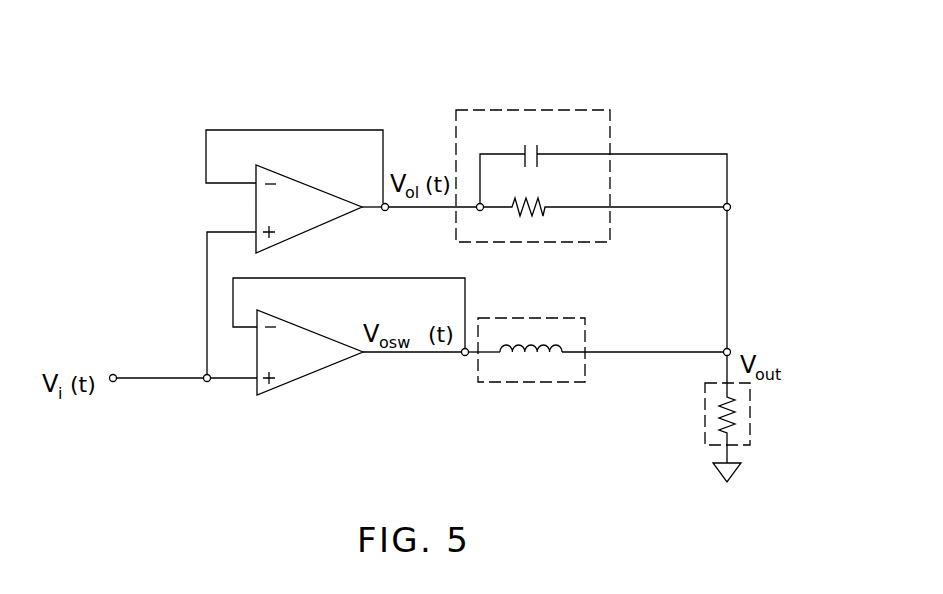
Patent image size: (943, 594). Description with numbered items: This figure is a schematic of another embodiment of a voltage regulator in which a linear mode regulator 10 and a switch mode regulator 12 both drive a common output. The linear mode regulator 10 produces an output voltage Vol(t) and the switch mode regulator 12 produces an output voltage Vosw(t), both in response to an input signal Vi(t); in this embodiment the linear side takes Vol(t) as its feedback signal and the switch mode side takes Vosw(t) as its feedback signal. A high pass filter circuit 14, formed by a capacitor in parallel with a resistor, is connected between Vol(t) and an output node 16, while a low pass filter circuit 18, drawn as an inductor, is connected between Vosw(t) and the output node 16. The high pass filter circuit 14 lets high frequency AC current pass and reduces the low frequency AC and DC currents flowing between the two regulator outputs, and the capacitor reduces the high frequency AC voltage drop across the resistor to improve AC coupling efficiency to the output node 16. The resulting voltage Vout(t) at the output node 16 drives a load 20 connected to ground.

The linear mode regulator 10 is at (308, 230).
The switch mode regulator 12 is at (308, 375).
The high pass filter circuit 14 is at (532, 110).
The output node 16 is at (731, 348).
The low pass filter circuit 18 is at (533, 382).
The load 20 is at (705, 415).